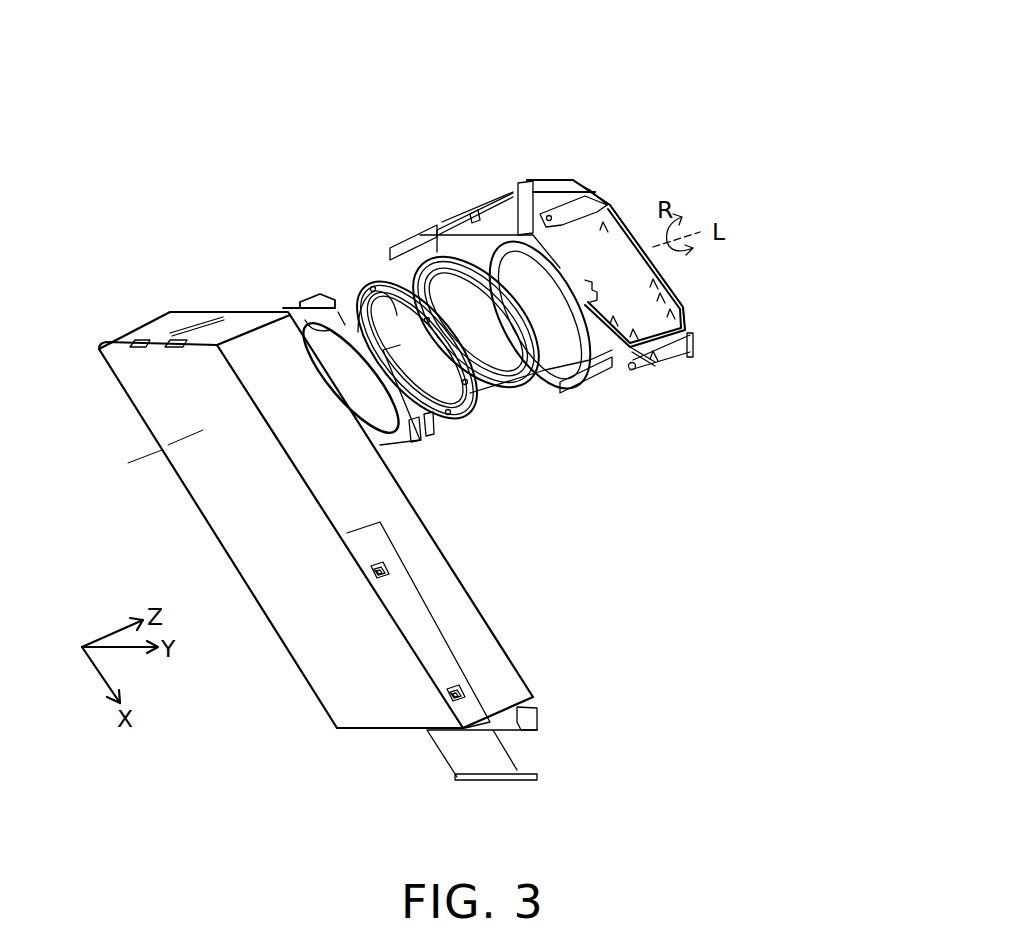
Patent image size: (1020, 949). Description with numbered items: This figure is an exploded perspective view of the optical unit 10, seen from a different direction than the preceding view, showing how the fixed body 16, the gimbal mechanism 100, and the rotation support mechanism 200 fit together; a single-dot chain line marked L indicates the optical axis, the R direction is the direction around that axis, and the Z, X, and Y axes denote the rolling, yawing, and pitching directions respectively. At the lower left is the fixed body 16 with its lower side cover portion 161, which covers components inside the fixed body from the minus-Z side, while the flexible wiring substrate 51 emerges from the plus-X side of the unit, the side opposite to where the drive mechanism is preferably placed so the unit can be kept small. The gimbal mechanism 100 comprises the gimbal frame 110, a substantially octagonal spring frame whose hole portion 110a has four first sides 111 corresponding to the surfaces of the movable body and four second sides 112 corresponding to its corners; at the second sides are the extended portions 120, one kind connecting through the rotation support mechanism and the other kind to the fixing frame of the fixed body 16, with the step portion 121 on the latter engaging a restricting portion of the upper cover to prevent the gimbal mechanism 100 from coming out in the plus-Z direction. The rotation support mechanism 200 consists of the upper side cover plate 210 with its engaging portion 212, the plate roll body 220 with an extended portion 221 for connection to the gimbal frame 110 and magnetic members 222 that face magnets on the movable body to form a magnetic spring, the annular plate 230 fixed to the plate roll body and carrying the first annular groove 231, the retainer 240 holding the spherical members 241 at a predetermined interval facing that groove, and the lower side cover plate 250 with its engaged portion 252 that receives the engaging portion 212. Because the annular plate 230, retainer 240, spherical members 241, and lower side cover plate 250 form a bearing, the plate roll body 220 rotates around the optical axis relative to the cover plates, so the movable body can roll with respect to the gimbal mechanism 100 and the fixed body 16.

The optical unit 10 is at (739, 87).
The fixed body 16 is at (470, 590).
The lower side cover portion 161 is at (323, 643).
The flexible wiring substrate 51 is at (473, 747).
The gimbal mechanism 100 is at (637, 197).
The gimbal frame 110 is at (550, 180).
The hole portion 110a is at (610, 267).
The first side 111 is at (540, 183).
The second side 112 is at (528, 185).
The extended portion 120 is at (515, 185).
The step portion 121 is at (590, 197).
The rotation support mechanism 200 is at (648, 432).
The upper side cover plate 210 is at (568, 280).
The engaging portion 212 is at (472, 212).
The plate roll body 220 is at (445, 225).
The extended portion 221 is at (392, 247).
The magnetic member 222 is at (434, 412).
The annular plate 230 is at (433, 250).
The first annular groove 231 is at (446, 280).
The retainer 240 is at (480, 385).
The spherical member 241 is at (387, 292).
The lower side cover plate 250 is at (318, 317).
The engaged portion 252 is at (337, 308).